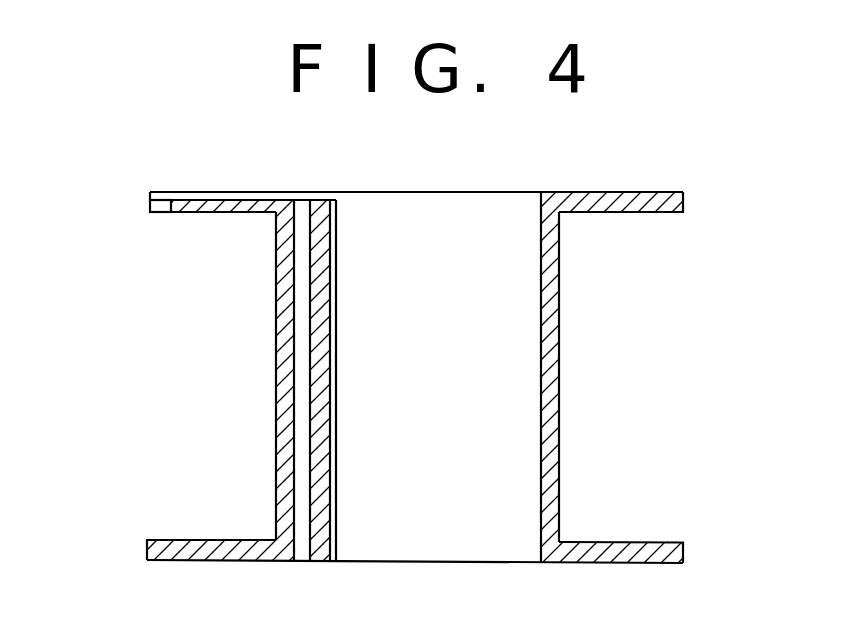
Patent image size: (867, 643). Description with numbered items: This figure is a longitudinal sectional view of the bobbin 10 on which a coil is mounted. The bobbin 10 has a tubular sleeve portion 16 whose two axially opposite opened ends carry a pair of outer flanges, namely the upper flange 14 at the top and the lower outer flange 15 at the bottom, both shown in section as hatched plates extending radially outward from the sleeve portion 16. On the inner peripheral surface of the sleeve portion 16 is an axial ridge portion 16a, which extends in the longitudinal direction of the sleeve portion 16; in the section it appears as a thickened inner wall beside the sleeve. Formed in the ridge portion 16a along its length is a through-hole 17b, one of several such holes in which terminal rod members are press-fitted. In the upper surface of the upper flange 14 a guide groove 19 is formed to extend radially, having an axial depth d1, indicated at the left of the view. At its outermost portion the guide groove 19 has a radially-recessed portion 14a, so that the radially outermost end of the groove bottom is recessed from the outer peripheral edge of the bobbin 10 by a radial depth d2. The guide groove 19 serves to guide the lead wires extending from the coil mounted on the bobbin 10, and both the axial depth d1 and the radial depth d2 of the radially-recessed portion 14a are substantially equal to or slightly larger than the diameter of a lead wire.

The bobbin 10 is at (676, 192).
The upper flange 14 is at (603, 192).
The radially-recessed portion 14a is at (162, 213).
The outer flange 15 is at (642, 563).
The sleeve portion 16 is at (559, 335).
The axial ridge portion 16a is at (338, 236).
The through-hole 17b is at (298, 388).
The guide groove 19 is at (236, 192).
The axial depth d1 is at (150, 200).
The radial depth d2 is at (171, 212).